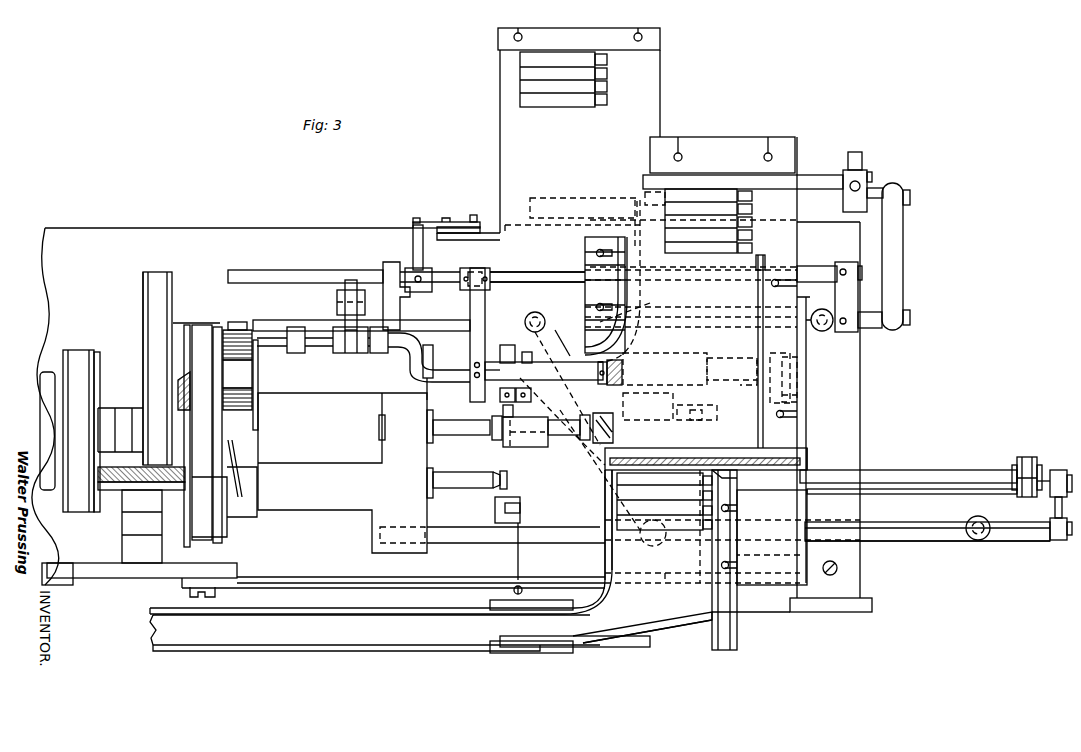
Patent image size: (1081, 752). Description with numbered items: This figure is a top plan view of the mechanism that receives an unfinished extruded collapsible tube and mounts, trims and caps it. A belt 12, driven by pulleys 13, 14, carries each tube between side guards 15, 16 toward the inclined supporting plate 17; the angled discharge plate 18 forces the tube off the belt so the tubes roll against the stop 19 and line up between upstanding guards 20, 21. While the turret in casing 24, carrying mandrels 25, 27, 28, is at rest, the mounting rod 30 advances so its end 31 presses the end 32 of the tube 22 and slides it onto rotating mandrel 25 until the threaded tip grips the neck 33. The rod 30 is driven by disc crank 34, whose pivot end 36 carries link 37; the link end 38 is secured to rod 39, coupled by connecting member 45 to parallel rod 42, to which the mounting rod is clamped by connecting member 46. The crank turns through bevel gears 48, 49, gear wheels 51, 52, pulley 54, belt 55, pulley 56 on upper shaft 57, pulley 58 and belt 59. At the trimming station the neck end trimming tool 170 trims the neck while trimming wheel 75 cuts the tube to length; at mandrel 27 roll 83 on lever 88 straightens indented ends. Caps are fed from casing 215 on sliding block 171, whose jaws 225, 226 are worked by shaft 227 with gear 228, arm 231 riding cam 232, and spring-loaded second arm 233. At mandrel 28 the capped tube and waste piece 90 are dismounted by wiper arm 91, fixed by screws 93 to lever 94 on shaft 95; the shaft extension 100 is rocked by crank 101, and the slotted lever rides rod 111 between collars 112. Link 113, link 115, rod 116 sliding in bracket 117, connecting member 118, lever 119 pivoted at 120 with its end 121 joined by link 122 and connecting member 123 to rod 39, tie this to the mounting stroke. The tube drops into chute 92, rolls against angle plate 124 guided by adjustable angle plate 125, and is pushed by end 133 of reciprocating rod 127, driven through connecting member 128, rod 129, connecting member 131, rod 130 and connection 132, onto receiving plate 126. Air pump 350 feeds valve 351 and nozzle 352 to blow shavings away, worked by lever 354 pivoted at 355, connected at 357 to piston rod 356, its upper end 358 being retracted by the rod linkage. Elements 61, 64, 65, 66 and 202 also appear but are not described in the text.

The belt 12 is at (153, 632).
The pulley 13 is at (543, 653).
The pulley 14 is at (832, 612).
The side guard 15 is at (360, 612).
The side guard 16 is at (368, 651).
The inclined supporting plate 17 is at (622, 605).
The discharge plate 18 is at (683, 624).
The stop 19 is at (807, 456).
The upstanding guard 20 is at (605, 556).
The upstanding guard 21 is at (737, 573).
The tube 22 is at (660, 478).
The casing 24 is at (342, 473).
The mandrel 25 is at (498, 476).
The mandrel 27 is at (503, 368).
The mandrel 28 is at (490, 432).
The mounting rod 30 is at (920, 470).
The end of mounting rod 31 is at (727, 482).
The end of tube 32 is at (714, 462).
The neck of tube 33 is at (605, 470).
The disc crank 34 is at (130, 578).
The pivot end 36 is at (215, 594).
The link 37 is at (313, 578).
The end of link 38 is at (700, 573).
The rod 39 is at (1018, 535).
The parallel rod 42 is at (930, 494).
The connecting member 45 is at (1050, 507).
The connecting member 46 is at (1034, 457).
The bevel gear 48 is at (140, 482).
The bevel gear 49 is at (190, 385).
The gear wheel 51 is at (252, 402).
The gear wheel 52 is at (243, 330).
The pulley 54 is at (143, 283).
The belt 55 is at (158, 272).
The pulley 56 is at (143, 405).
The upper shaft 57 is at (385, 426).
The pulley 58 is at (97, 352).
The belt 59 is at (80, 350).
The handle 61 is at (40, 382).
The post 64 is at (209, 325).
The post 65 is at (187, 325).
The bearing 66 is at (225, 537).
The trimming wheel 75 is at (508, 478).
The roll 83 is at (510, 366).
The lever 88 is at (533, 350).
The waste piece 90 is at (510, 430).
The wiper arm 91 is at (548, 440).
The inclined chute 92 is at (758, 390).
The screws 93 is at (470, 363).
The lever 94 is at (485, 297).
The shaft 95 is at (436, 358).
The shaft extension 100 is at (327, 346).
The crank 101 is at (358, 353).
The rod 111 is at (517, 272).
The collars 112 is at (478, 268).
The link 113 is at (420, 268).
The link 115 is at (852, 300).
The parallel rod 116 is at (455, 312).
The bracket 117 is at (408, 305).
The connecting member 118 is at (535, 312).
The lever 119 is at (532, 335).
The pivot 120 is at (568, 414).
The end of lever 121 is at (650, 546).
The link 122 is at (925, 541).
The connecting member 123 is at (975, 541).
The angle plate 124 is at (691, 170).
The adjustable angle plate 125 is at (765, 260).
The receiving plate 126 is at (660, 101).
The reciprocating rod 127 is at (717, 185).
The connecting member 128 is at (850, 162).
The reciprocating rod 129 is at (876, 190).
The rod 130 is at (872, 330).
The connecting member 131 is at (898, 237).
The connection 132 is at (708, 312).
The end of rod 133 is at (645, 181).
The neck end trimming tool 170 is at (603, 418).
The sliding block 171 is at (688, 416).
The block 202 is at (622, 376).
The casing 215 is at (648, 406).
The cap-engaging jaw 225 is at (600, 378).
The cap-engaging jaw 226 is at (626, 355).
The shaft 227 is at (757, 360).
The gear 228 is at (707, 368).
The arm 231 is at (797, 368).
The cam 232 is at (797, 400).
The second arm 233 is at (778, 353).
The air pump 350 is at (553, 198).
The valve 351 is at (640, 282).
The nozzle 352 is at (645, 310).
The lever 354 is at (432, 221).
The pivot 355 is at (472, 215).
The piston rod 356 is at (460, 233).
The connection 357 is at (447, 218).
The upper end of lever 358 is at (414, 218).